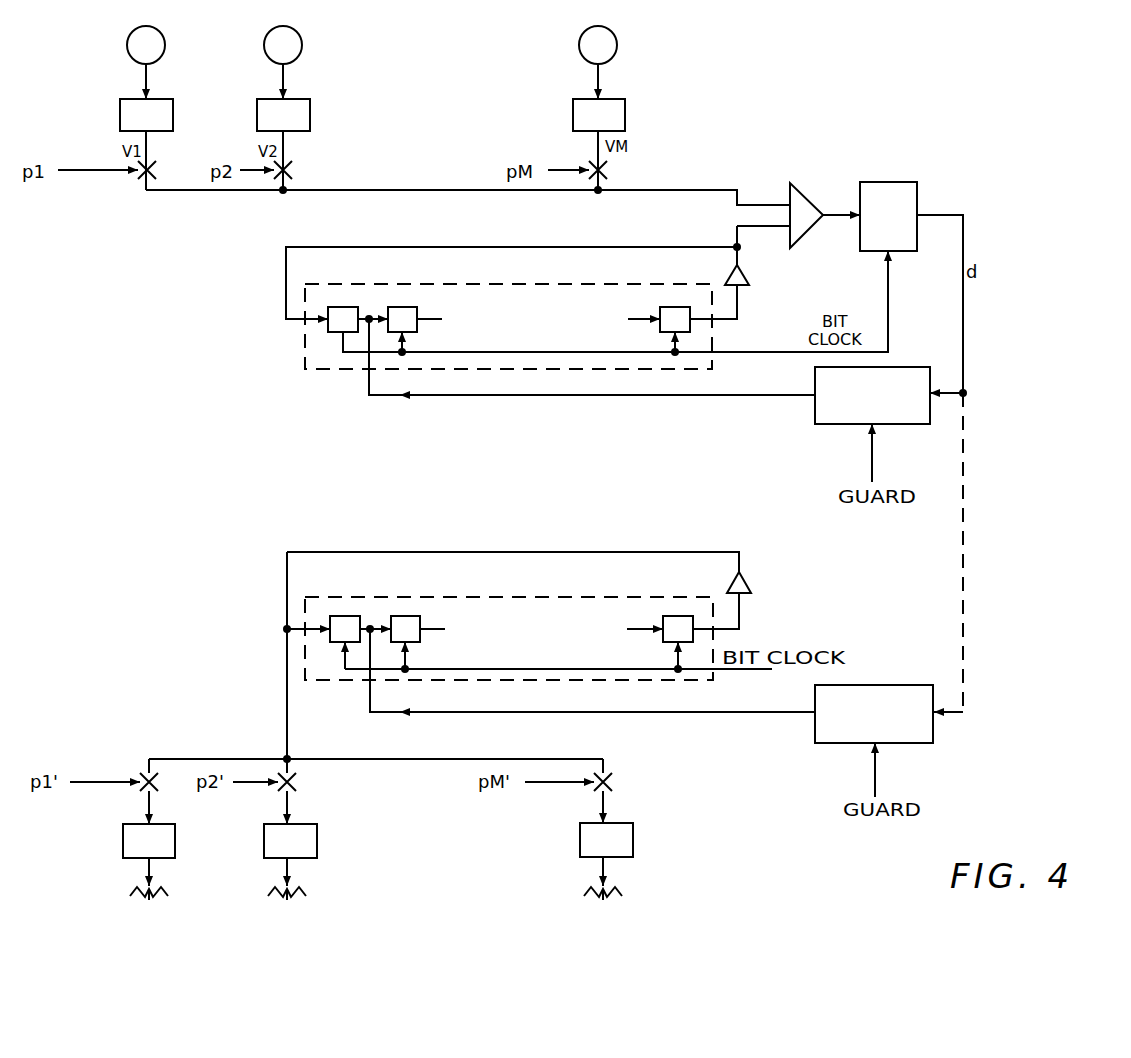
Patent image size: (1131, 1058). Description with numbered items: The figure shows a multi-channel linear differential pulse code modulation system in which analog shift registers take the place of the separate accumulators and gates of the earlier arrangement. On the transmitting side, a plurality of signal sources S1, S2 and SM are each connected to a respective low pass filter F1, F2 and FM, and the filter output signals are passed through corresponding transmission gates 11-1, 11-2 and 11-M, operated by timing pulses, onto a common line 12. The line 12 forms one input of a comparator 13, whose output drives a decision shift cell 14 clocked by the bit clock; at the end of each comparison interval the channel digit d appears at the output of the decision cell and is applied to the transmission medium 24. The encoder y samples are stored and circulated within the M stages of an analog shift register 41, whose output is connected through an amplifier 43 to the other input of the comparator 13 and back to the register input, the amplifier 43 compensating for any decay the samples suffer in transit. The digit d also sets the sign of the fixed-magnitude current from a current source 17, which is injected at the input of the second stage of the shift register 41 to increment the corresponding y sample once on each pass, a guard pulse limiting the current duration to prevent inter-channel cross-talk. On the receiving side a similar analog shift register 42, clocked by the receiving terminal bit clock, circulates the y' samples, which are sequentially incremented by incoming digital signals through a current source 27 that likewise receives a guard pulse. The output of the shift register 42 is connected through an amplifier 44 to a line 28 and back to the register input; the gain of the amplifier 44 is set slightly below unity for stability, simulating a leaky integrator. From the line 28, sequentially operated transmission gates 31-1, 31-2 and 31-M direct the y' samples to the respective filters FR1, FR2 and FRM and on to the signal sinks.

The transmission gate 11-1 is at (156, 176).
The transmission gate 11-2 is at (292, 176).
The transmission gate 11-M is at (610, 172).
The line 12 is at (404, 190).
The comparator 13 is at (803, 192).
The decision shift cell 14 is at (906, 197).
The current source 17 is at (910, 425).
The transmission medium 24 is at (965, 491).
The current source 27 is at (926, 746).
The line 28 is at (445, 759).
The transmission gate 31-1 is at (160, 785).
The transmission gate 31-2 is at (299, 785).
The transmission gate 31-M is at (615, 782).
The analog shift register 41 is at (305, 340).
The analog shift register 42 is at (350, 597).
The amplifier 43 is at (740, 270).
The amplifier 44 is at (742, 592).
The signal source S1 is at (160, 43).
The signal source S2 is at (297, 43).
The signal source SM is at (612, 43).
The low pass filter F1 is at (146, 115).
The low pass filter F2 is at (283, 115).
The low pass filter FM is at (599, 115).
The filter FR1 is at (149, 841).
The filter FR2 is at (290, 841).
The filter FRM is at (606, 840).